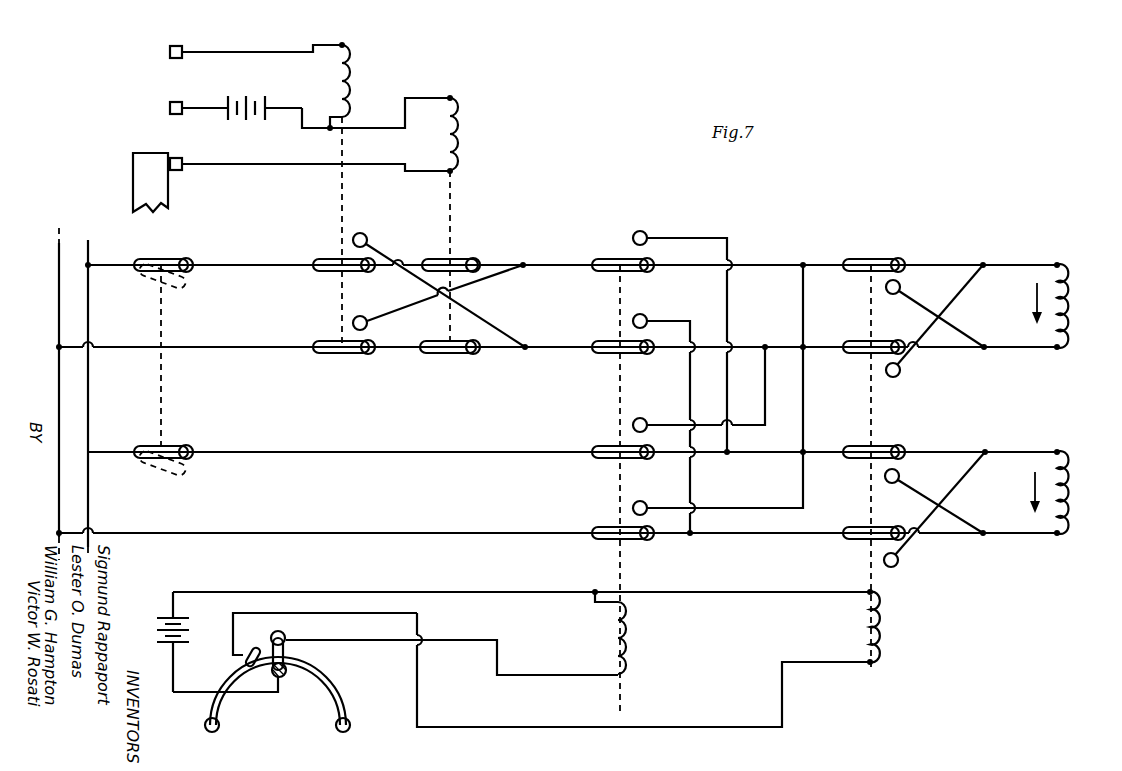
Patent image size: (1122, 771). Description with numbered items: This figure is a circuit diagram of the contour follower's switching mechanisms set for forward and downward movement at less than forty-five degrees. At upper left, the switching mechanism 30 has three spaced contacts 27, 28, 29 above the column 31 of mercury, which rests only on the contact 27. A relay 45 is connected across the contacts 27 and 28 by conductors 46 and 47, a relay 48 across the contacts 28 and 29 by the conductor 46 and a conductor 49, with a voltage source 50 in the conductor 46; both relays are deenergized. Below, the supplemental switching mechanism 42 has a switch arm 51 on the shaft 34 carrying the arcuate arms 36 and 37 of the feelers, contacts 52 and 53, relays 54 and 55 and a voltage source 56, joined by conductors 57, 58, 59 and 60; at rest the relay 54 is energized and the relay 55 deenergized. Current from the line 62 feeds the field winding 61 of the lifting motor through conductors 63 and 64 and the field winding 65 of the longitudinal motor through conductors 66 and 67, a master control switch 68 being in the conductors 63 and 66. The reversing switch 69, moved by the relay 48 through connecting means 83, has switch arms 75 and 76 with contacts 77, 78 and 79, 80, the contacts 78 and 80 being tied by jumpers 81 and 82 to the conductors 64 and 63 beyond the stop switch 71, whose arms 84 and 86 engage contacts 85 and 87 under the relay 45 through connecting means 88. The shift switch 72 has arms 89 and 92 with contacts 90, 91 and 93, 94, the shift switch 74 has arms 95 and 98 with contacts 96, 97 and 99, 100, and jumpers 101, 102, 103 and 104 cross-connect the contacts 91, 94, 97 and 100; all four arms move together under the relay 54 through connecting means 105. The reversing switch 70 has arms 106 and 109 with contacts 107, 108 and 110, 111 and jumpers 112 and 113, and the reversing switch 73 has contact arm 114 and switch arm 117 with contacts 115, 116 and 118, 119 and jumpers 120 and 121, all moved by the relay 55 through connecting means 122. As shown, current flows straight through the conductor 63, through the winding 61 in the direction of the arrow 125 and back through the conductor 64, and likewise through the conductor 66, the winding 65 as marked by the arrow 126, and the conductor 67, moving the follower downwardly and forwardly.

The contact 27 is at (178, 157).
The contact 28 is at (183, 103).
The contact 29 is at (178, 46).
The switching mechanism 30 is at (368, 110).
The column of mercury 31 is at (133, 186).
The shaft 34 is at (284, 680).
The arcuate arm 36 is at (333, 710).
The arcuate arm 37 is at (222, 708).
The supplemental switching mechanism 42 is at (253, 628).
The relay 45 is at (460, 135).
The conductor 46 is at (216, 110).
The conductor 47 is at (306, 168).
The relay 48 is at (352, 72).
The conductor 49 is at (262, 52).
The voltage source 50 is at (252, 100).
The switch arm 51 is at (292, 655).
The contact 52 is at (284, 632).
The contact 53 is at (245, 664).
The relay 54 is at (630, 625).
The relay 55 is at (880, 627).
The voltage source 56 is at (157, 624).
The conductor 57 is at (186, 694).
The conductor 58 is at (464, 591).
The conductor 59 is at (492, 640).
The conductor 60 is at (383, 613).
The field winding 61 is at (1067, 290).
The line 62 is at (88, 308).
The conductor 63 is at (250, 264).
The conductor 64 is at (272, 349).
The field winding 65 is at (1068, 500).
The conductor 66 is at (390, 451).
The conductor 67 is at (392, 531).
The master control switch 68 is at (172, 262).
The reversing switch 69 is at (395, 290).
The reversing switch 70 is at (928, 280).
The stop switch 71 is at (446, 308).
The shift switch 72 is at (633, 297).
The reversing switch 73 is at (915, 479).
The shift switch 74 is at (632, 474).
The switch arm 75 is at (330, 272).
The switch arm 76 is at (330, 355).
The contact 77 is at (368, 275).
The contact 78 is at (366, 233).
The contact 79 is at (372, 356).
The contact 80 is at (352, 322).
The jumper 81 is at (505, 334).
The jumper 82 is at (488, 285).
The connecting means 83 is at (342, 221).
The switch arm 84 is at (458, 258).
The contact 85 is at (482, 262).
The switch arm 86 is at (440, 355).
The contact 87 is at (482, 356).
The connecting means 88 is at (452, 208).
The switch arm 89 is at (608, 260).
The contact 90 is at (650, 274).
The contact 91 is at (642, 231).
The switch arm 92 is at (610, 355).
The contact 93 is at (652, 356).
The contact 94 is at (652, 313).
The switch arm 95 is at (606, 446).
The contact 96 is at (648, 460).
The contact 97 is at (641, 418).
The switch arm 98 is at (604, 541).
The contact 99 is at (647, 542).
The contact 100 is at (667, 495).
The jumper 101 is at (730, 296).
The jumper 102 is at (691, 395).
The jumper 103 is at (766, 378).
The jumper 104 is at (806, 381).
The connecting means 105 is at (620, 407).
The switch arm 106 is at (870, 258).
The contact 107 is at (900, 258).
The contact 108 is at (886, 290).
The switch arm 109 is at (856, 355).
The contact 110 is at (900, 340).
The contact 111 is at (900, 377).
The jumper 112 is at (972, 335).
The jumper 113 is at (978, 280).
The contact arm 114 is at (856, 446).
The contact 115 is at (898, 446).
The contact 116 is at (885, 476).
The switch arm 117 is at (860, 528).
The contact 118 is at (898, 527).
The contact 119 is at (899, 567).
The jumper 120 is at (975, 528).
The jumper 121 is at (976, 470).
The connecting means 122 is at (871, 572).
The arrow 125 is at (1037, 300).
The direction arrow 126 is at (1035, 500).